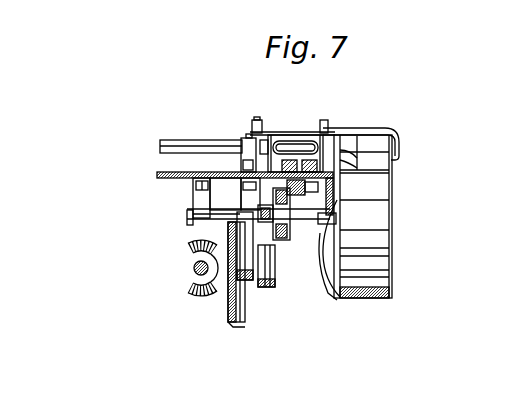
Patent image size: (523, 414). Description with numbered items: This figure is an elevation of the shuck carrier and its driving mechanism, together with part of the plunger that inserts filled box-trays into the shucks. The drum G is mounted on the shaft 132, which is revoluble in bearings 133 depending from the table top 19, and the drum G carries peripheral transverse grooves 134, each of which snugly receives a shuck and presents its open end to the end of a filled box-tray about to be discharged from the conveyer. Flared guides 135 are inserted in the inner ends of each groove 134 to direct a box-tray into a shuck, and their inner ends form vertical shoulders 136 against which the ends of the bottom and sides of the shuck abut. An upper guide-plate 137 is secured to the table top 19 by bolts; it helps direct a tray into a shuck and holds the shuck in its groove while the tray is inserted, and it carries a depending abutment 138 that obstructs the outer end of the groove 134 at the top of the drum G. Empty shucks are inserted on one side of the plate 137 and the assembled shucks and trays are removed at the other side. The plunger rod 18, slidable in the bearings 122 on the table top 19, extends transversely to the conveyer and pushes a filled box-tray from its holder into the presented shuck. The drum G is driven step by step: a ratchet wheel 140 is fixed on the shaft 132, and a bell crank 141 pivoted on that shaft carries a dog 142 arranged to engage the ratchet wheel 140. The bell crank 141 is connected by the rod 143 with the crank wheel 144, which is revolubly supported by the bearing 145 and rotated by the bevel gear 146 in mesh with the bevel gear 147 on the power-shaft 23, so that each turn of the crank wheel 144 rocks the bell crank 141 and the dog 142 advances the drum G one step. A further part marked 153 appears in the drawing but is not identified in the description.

The plunger rod 18 is at (176, 147).
The table top 19 is at (165, 178).
The power-shaft 23 is at (194, 276).
The bearings 122 is at (244, 140).
The shaft 132 is at (190, 222).
The bearings 133 is at (190, 212).
The peripheral transverse grooves 134 is at (370, 222).
The flared guides 135 is at (333, 300).
The vertical shoulders 136 is at (352, 156).
The upper guide-plate 137 is at (273, 133).
The abutment 138 is at (403, 143).
The ratchet wheel 140 is at (276, 230).
The bell crank 141 is at (295, 272).
The dog 142 is at (223, 204).
The rod 143 is at (277, 263).
The crank wheel 144 is at (263, 288).
The bearing 145 is at (247, 300).
The bevel gear 146 is at (218, 310).
The bevel gear 147 is at (195, 253).
The bracket 153 is at (337, 220).
The drum G is at (398, 168).